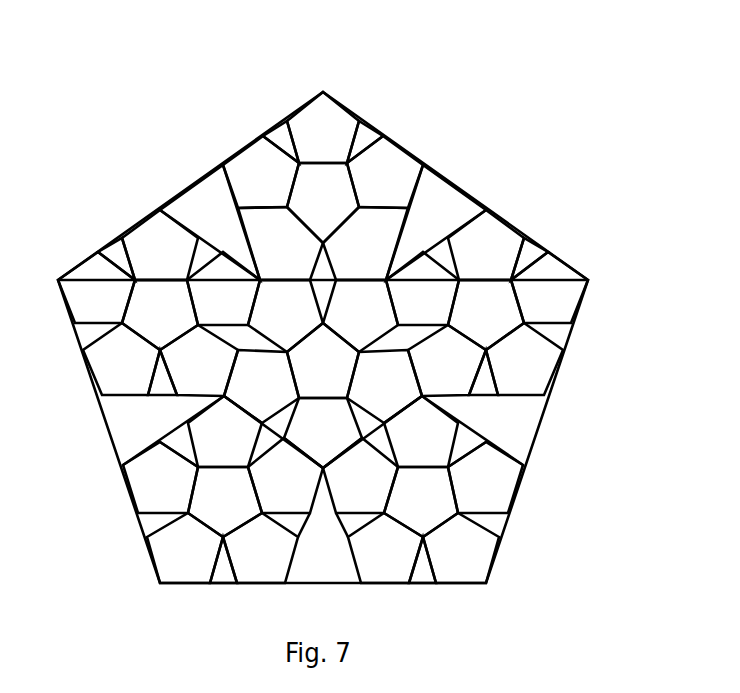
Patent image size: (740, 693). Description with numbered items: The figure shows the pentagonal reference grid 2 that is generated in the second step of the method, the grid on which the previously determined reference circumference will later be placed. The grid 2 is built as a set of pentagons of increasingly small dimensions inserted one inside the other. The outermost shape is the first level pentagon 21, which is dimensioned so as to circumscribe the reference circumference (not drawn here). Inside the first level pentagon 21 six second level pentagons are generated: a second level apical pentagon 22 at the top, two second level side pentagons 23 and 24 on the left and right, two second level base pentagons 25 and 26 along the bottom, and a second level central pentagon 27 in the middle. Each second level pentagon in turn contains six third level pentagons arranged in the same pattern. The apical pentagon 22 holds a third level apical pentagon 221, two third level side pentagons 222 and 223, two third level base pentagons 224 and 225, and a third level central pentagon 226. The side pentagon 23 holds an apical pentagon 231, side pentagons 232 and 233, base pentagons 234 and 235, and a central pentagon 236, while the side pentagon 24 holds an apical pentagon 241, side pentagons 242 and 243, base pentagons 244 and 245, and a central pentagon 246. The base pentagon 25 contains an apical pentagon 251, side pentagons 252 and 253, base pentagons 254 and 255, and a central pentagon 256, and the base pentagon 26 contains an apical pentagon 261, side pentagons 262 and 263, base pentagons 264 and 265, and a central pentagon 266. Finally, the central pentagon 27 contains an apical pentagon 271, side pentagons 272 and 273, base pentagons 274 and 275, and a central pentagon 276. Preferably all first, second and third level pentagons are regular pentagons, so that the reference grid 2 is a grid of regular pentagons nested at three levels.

The reference grid 2 is at (346, 299).
The first level pentagon 21 is at (249, 146).
The second level apical pentagon 22 is at (326, 186).
The second level side pentagon 23 is at (147, 278).
The second level side pentagon 24 is at (501, 293).
The second level base pentagon 25 is at (189, 489).
The second level base pentagon 26 is at (481, 485).
The second level central pentagon 27 is at (272, 296).
The third level apical pentagon 221 is at (311, 146).
The third level side pentagon 222 is at (246, 191).
The third level side pentagon 223 is at (373, 191).
The third level base pentagon 224 is at (271, 259).
The third level base pentagon 225 is at (348, 259).
The third level central pentagon 226 is at (311, 207).
The third level apical pentagon 231 is at (146, 257).
The third level side pentagon 232 is at (81, 299).
The third level side pentagon 233 is at (207, 299).
The third level base pentagon 234 is at (105, 374).
The third level base pentagon 235 is at (181, 374).
The third level central pentagon 236 is at (145, 324).
The third level apical pentagon 241 is at (471, 257).
The third level side pentagon 242 is at (408, 299).
The third level side pentagon 243 is at (535, 299).
The third level base pentagon 244 is at (433, 374).
The third level base pentagon 245 is at (509, 374).
The third level central pentagon 246 is at (469, 324).
The third level apical pentagon 251 is at (206, 447).
The third level side pentagon 252 is at (145, 492).
The third level side pentagon 253 is at (270, 492).
The third level base pentagon 254 is at (170, 562).
The third level base pentagon 255 is at (246, 562).
The third level central pentagon 256 is at (206, 512).
The third level apical pentagon 261 is at (408, 447).
The third level side pentagon 262 is at (344, 492).
The third level side pentagon 263 is at (469, 492).
The third level base pentagon 264 is at (368, 562).
The third level base pentagon 265 is at (444, 562).
The third level central pentagon 266 is at (408, 512).
The third level apical pentagon 271 is at (310, 439).
The third level side pentagon 272 is at (245, 391).
The third level side pentagon 273 is at (370, 391).
The third level base pentagon 274 is at (269, 321).
The third level base pentagon 275 is at (348, 321).
The third level central pentagon 276 is at (309, 373).